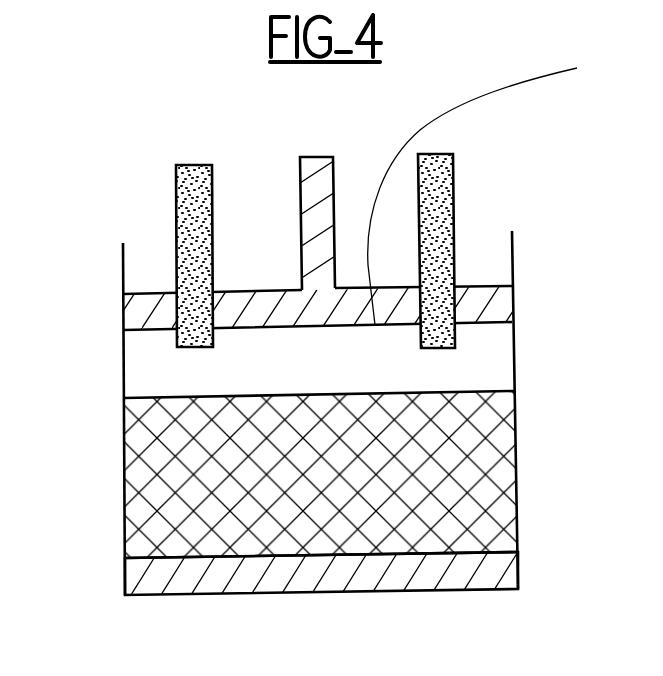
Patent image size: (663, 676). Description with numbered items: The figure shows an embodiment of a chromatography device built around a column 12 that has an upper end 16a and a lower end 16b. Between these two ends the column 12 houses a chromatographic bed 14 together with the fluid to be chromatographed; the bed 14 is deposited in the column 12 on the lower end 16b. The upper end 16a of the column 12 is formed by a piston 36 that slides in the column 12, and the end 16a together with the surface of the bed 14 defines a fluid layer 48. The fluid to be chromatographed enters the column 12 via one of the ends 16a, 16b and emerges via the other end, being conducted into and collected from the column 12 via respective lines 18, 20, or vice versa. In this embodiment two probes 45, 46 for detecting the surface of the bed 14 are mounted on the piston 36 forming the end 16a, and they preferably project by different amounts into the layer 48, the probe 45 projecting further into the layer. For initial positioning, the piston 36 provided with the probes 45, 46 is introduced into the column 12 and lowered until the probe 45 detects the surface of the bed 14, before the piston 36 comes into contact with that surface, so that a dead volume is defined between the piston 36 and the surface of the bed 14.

The column 12 is at (116, 488).
The chromatographic bed 14 is at (492, 473).
The upper end 16a is at (516, 305).
The lower end 16b is at (521, 565).
The line 18 is at (548, 80).
The line 20 is at (338, 555).
The piston 36 is at (300, 205).
The first probe 45 is at (454, 182).
The probe 46 is at (176, 198).
The fluid layer 48 is at (497, 358).